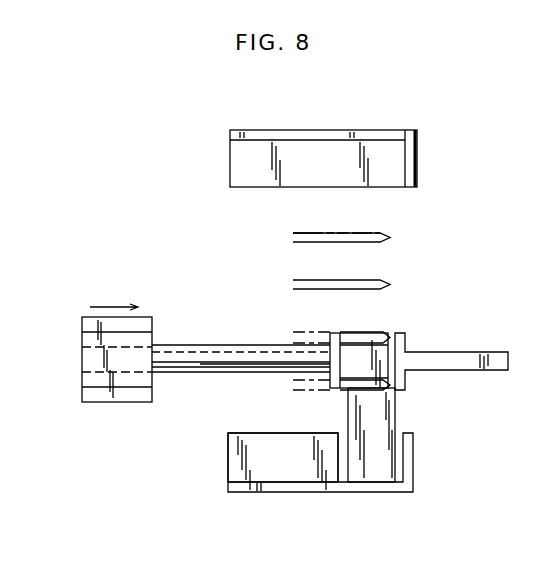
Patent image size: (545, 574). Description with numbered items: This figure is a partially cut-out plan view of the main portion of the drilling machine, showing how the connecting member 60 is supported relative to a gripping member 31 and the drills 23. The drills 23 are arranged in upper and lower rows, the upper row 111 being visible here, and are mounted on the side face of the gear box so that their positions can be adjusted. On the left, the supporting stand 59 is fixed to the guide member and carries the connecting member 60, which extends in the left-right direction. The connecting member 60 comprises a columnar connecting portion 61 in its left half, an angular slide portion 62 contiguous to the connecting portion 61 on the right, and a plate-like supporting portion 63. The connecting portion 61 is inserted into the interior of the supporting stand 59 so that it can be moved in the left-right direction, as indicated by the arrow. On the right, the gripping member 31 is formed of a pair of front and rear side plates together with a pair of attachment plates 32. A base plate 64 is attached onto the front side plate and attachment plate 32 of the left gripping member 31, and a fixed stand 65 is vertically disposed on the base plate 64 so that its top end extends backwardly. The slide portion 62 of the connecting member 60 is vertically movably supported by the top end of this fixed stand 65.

The gripping member 31 is at (447, 150).
The attachment plate 32 is at (415, 168).
The upper row of drills 111 is at (437, 247).
The drill 23 is at (392, 241).
The supporting stand 59 is at (90, 322).
The connecting member 60 is at (193, 345).
The columnar connecting portion 61 is at (252, 350).
The slide portion 62 is at (392, 346).
The supporting portion 63 is at (462, 352).
The base plate 64 is at (408, 466).
The fixed stand 65 is at (388, 413).